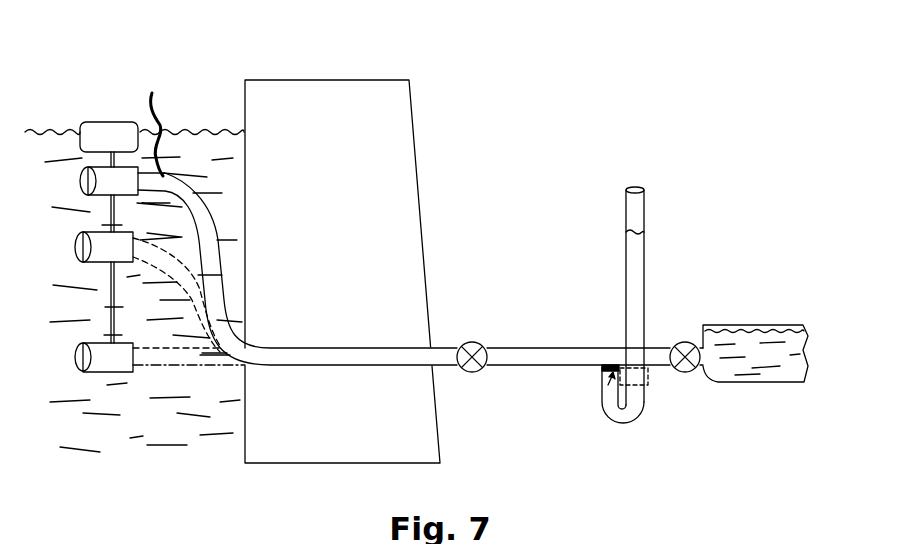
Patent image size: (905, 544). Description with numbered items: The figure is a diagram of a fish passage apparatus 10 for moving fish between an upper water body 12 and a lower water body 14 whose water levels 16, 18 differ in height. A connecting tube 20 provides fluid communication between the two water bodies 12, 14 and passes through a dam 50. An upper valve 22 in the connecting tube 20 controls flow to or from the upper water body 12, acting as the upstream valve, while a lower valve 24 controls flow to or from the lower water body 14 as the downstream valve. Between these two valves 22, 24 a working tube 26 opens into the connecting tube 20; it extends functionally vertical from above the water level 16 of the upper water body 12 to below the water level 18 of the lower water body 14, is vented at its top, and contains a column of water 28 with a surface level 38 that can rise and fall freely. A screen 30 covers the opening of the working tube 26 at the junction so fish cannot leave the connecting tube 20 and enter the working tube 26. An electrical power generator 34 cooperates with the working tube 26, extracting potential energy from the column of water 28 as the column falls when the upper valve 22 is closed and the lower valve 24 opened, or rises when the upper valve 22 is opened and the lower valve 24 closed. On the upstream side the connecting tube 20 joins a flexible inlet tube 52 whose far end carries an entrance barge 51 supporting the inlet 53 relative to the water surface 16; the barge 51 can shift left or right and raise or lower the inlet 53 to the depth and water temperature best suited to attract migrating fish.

The fish passage apparatus 10 is at (546, 243).
The upper water body 12 is at (207, 147).
The lower water body 14 is at (783, 373).
The water level of the upper water body 16 is at (222, 143).
The water level of the lower water body 18 is at (782, 325).
The connecting tube 20 is at (605, 353).
The upper valve 22 is at (469, 345).
The lower valve 24 is at (687, 341).
The working tube 26 is at (634, 188).
The column of water 28 is at (637, 270).
The screen 30 is at (604, 386).
The electrical power generator 34 is at (649, 383).
The surface level 38 is at (630, 230).
The dam 50 is at (414, 143).
The entrance barge 51 is at (98, 125).
The flexible inlet tube 52 is at (152, 123).
The inlet 53 is at (75, 245).